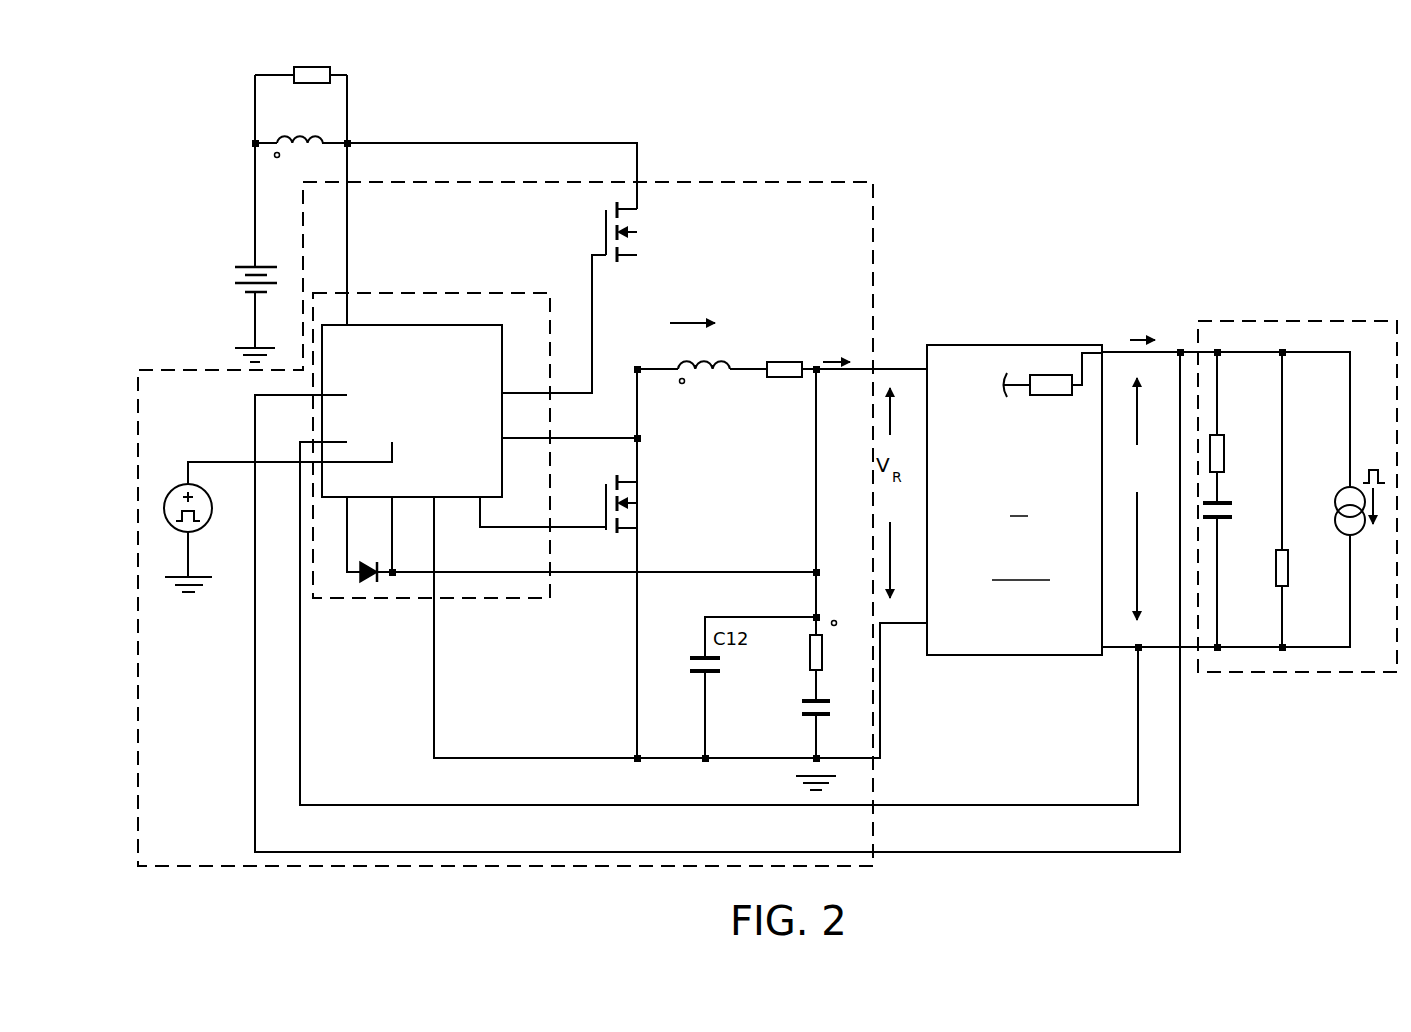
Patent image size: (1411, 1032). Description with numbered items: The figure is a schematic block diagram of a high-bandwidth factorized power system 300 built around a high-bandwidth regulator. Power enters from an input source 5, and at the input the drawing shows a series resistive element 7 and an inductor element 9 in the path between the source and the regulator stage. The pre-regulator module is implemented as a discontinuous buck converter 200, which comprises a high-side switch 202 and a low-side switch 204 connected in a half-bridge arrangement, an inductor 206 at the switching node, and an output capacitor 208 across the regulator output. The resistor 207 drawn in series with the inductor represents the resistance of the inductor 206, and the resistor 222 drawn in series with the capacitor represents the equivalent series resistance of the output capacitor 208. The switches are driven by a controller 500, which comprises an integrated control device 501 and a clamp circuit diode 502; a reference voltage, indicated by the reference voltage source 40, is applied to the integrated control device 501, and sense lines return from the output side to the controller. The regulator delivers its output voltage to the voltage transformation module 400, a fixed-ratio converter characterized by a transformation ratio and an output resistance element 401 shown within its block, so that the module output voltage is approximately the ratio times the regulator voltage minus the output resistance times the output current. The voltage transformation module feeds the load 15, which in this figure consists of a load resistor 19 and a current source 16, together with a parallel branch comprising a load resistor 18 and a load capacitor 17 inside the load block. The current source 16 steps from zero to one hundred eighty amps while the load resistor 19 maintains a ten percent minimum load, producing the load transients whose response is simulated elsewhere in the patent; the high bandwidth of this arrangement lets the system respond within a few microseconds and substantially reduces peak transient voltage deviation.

The input source 5 is at (245, 265).
The input resistor R4 7 is at (330, 70).
The input inductor L5 9 is at (323, 140).
The load 15 is at (1268, 321).
The current source I2 16 is at (1337, 500).
The load capacitor C16 17 is at (1222, 525).
The load resistor R30 18 is at (1222, 430).
The resistor R31 19 is at (1276, 570).
The reference voltage source VREF 40 is at (180, 485).
The discontinuous buck converter 200 is at (752, 182).
The switch Q1 202 is at (637, 248).
The switch Q2 204 is at (637, 520).
The inductor L6 206 is at (730, 372).
The resistor R5 207 is at (800, 378).
The output capacitor C15 208 is at (800, 707).
The resistor R9 222 is at (803, 655).
The factorized power system 300 is at (1228, 108).
The voltage transformation module (VTM) 400 is at (948, 345).
The output resistance RO 401 is at (1033, 398).
The controller 500 is at (470, 293).
The integrated control device IC1 501 is at (495, 323).
The clamp circuit diode D7 502 is at (375, 576).